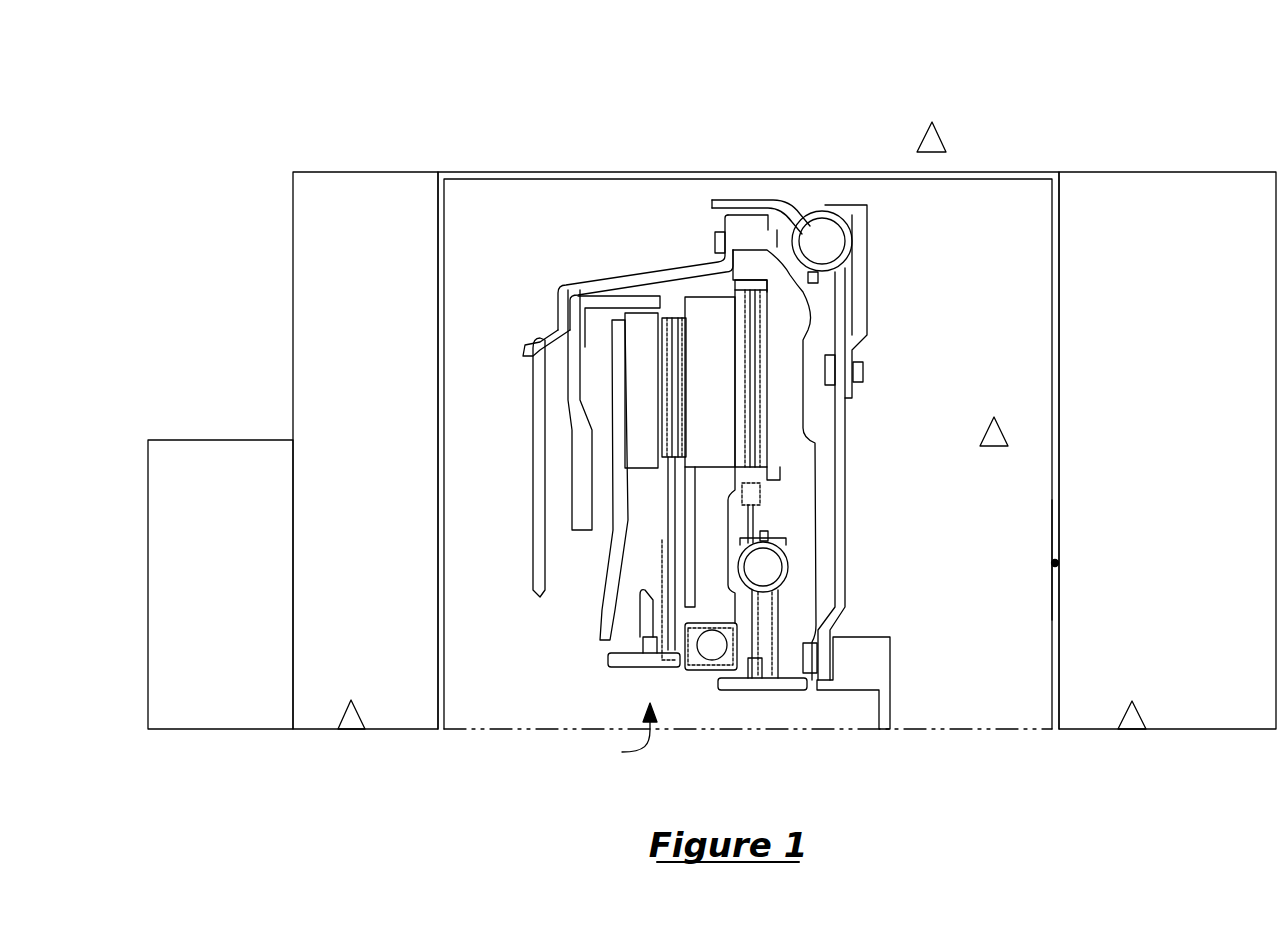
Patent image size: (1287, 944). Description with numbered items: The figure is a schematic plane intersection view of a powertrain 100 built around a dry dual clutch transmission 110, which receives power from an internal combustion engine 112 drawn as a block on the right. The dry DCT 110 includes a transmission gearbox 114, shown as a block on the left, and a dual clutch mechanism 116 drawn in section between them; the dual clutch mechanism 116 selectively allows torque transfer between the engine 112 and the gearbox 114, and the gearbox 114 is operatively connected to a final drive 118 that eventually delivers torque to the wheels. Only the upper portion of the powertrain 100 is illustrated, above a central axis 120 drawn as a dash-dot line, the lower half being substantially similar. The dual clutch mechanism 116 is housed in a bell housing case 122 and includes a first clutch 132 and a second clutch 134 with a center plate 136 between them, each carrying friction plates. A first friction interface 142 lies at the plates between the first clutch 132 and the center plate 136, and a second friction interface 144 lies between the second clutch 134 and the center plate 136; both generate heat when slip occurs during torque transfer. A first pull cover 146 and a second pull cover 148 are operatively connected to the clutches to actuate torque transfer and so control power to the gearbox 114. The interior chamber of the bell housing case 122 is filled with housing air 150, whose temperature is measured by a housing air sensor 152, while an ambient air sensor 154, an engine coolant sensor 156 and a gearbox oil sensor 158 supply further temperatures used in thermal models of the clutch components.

The powertrain 100 is at (205, 102).
The dry dual clutch transmission 110 is at (622, 128).
The internal combustion engine 112 is at (1145, 466).
The transmission gearbox 114 is at (344, 466).
The dual clutch mechanism 116 is at (615, 736).
The final drive 118 is at (200, 599).
The central axis 120 is at (937, 730).
The bell housing case 122 is at (1055, 563).
The first clutch 132 is at (790, 388).
The second clutch 134 is at (639, 346).
The center plate 136 is at (706, 519).
The first friction interface 142 is at (749, 388).
The second friction interface 144 is at (672, 372).
The first pull cover 146 is at (586, 282).
The second pull cover 148 is at (576, 432).
The housing air 150 is at (955, 357).
The housing air sensor 152 is at (994, 446).
The ambient air sensor 154 is at (946, 140).
The engine coolant sensor 156 is at (1132, 729).
The gearbox oil sensor 158 is at (351, 729).